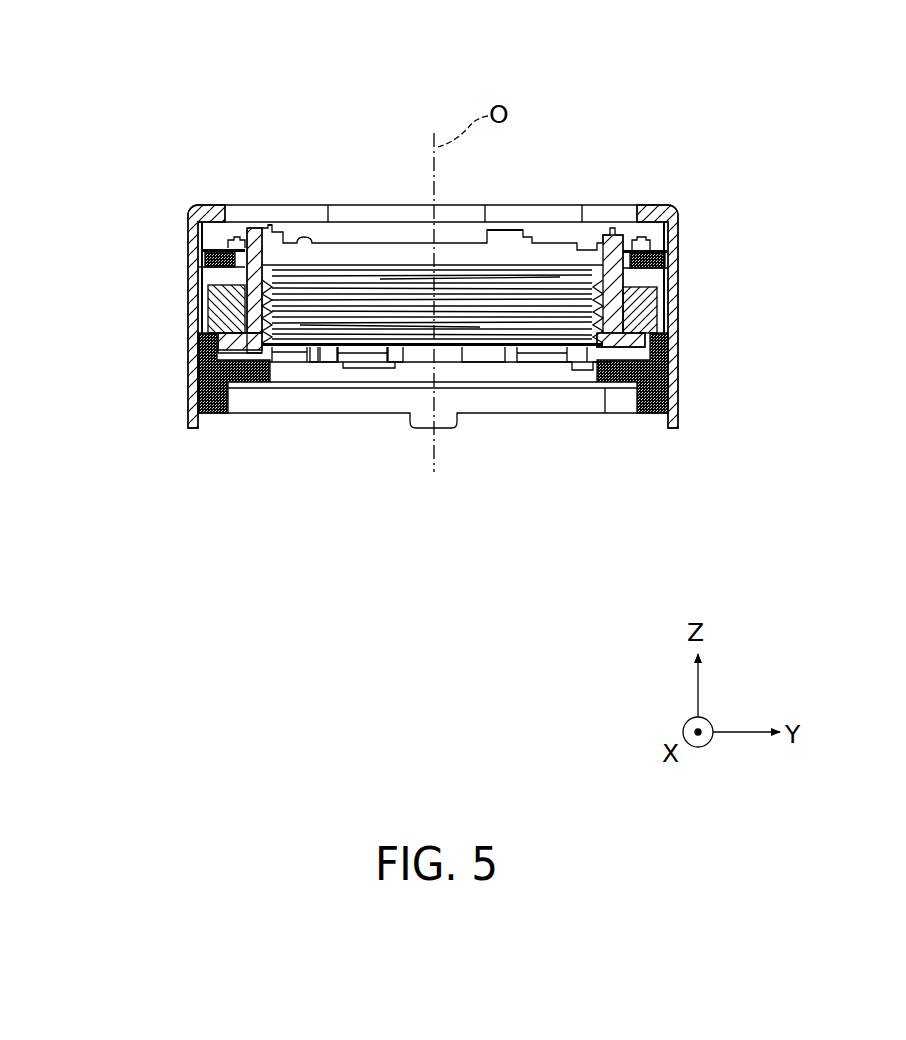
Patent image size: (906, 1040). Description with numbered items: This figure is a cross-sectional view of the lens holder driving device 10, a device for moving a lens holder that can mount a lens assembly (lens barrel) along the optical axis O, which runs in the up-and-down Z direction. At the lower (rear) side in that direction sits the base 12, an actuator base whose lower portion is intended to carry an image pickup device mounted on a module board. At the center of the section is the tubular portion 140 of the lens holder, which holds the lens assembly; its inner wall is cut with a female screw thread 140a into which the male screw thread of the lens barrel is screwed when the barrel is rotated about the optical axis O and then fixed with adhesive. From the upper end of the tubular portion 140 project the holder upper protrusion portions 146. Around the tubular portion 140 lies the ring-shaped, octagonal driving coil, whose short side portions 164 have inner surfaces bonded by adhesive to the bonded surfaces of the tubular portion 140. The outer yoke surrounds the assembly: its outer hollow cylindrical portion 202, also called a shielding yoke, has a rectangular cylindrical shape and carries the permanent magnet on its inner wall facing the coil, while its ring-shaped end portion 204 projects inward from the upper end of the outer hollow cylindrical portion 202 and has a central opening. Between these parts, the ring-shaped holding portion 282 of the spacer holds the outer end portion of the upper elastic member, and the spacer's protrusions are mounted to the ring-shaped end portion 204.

The lens holder driving device 10 is at (271, 79).
The base 12 is at (198, 380).
The tubular portion 140 is at (610, 243).
The female screw thread 140a is at (582, 250).
The holder upper protrusion portion 146 is at (270, 222).
The short side portion 164 is at (220, 312).
The outer hollow cylindrical portion 202 is at (203, 338).
The ring-shaped end portion 204 is at (212, 215).
The ring-shaped holding portion 282 is at (207, 266).